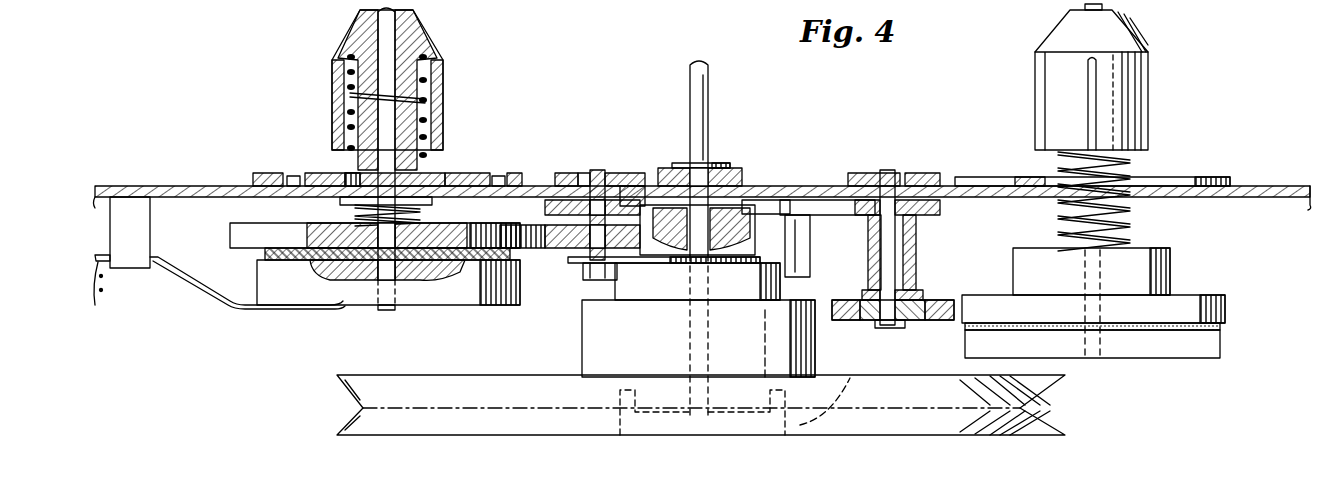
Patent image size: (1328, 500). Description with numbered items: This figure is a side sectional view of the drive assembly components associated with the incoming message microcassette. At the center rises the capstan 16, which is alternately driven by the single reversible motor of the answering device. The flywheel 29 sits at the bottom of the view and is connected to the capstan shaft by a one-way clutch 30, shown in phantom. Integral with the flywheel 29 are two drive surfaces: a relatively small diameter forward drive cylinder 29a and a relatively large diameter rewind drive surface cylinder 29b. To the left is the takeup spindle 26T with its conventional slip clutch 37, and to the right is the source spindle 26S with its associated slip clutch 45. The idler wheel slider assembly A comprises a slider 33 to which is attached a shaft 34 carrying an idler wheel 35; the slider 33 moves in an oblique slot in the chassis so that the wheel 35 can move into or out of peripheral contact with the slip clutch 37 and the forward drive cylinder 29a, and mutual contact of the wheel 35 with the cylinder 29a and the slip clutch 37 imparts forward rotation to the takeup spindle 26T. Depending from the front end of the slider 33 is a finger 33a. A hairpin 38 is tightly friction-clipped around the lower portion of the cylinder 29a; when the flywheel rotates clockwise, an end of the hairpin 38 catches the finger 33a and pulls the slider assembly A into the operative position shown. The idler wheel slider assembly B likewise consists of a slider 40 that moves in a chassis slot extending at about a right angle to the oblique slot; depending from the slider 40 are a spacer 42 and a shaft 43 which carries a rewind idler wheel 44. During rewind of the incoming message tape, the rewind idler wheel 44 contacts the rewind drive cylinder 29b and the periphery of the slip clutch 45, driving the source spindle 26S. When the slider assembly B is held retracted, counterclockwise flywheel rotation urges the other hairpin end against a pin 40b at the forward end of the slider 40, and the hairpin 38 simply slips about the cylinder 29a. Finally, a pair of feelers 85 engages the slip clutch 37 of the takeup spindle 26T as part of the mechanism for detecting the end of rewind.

The microcassette capstan 16 is at (705, 90).
The takeup spindle 26T is at (440, 33).
The source spindle 26S is at (1135, 36).
The flywheel 29 is at (450, 375).
The forward drive cylinder 29a is at (765, 235).
The rewind drive surface cylinder 29b is at (583, 346).
The one-way clutch 30 is at (848, 375).
The slider 33 is at (638, 170).
The finger 33a is at (600, 282).
The shaft 34 is at (560, 213).
The idler wheel 35 is at (562, 244).
The slip clutch 37 is at (247, 254).
The hairpin 38 is at (718, 270).
The slider 40 is at (872, 172).
The pin 40b is at (800, 245).
The spacer 42 is at (916, 258).
The shaft 43 is at (872, 266).
The rewind idler wheel 44 is at (920, 325).
The slip clutch 45 is at (1236, 308).
The feelers 85 is at (192, 307).
The slider assembly A is at (564, 140).
The slider assembly B is at (935, 151).